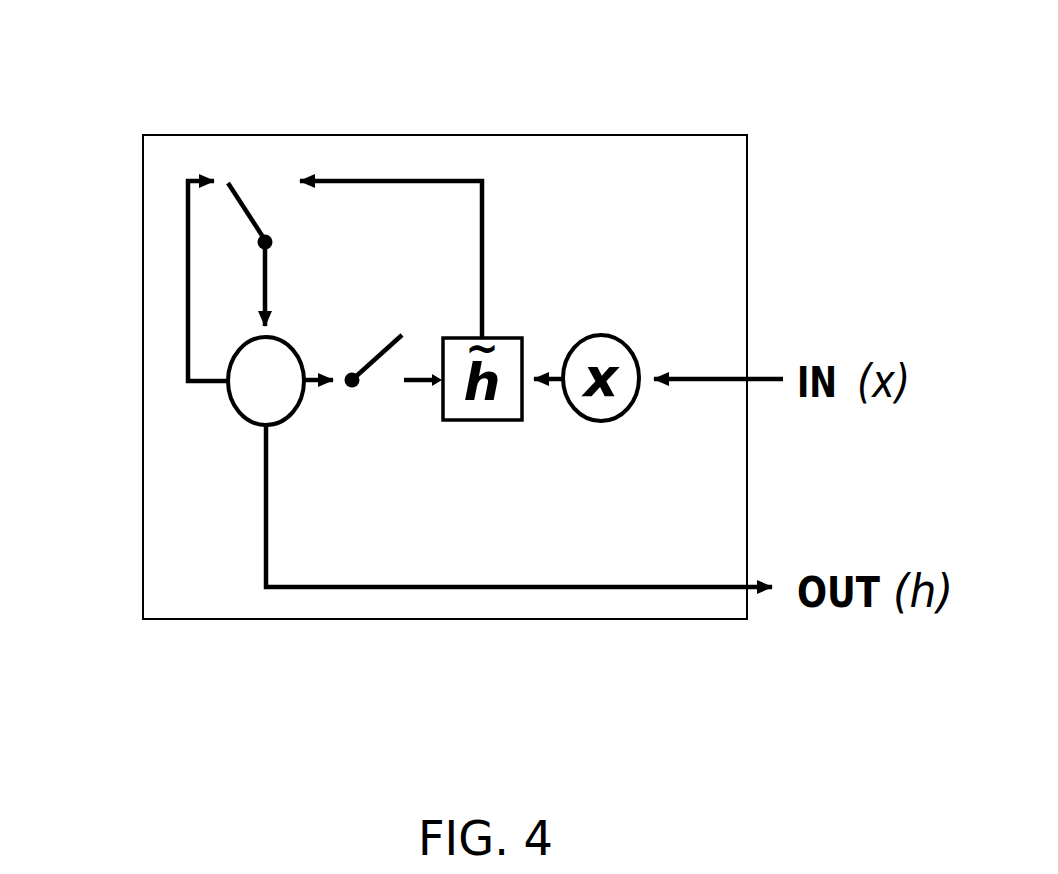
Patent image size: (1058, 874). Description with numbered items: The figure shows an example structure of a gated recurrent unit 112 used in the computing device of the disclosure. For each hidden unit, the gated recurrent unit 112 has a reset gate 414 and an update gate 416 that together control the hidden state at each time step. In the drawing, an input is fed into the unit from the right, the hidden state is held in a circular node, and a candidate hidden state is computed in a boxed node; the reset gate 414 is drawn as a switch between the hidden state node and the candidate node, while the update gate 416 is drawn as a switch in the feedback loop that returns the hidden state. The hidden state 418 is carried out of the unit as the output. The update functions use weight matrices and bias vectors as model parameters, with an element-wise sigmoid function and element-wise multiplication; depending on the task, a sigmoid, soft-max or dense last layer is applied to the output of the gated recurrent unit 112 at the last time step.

The gated recurrent unit 112 is at (167, 135).
The reset gate 414 is at (395, 332).
The update gate 416 is at (260, 233).
The hidden state 418 is at (233, 408).